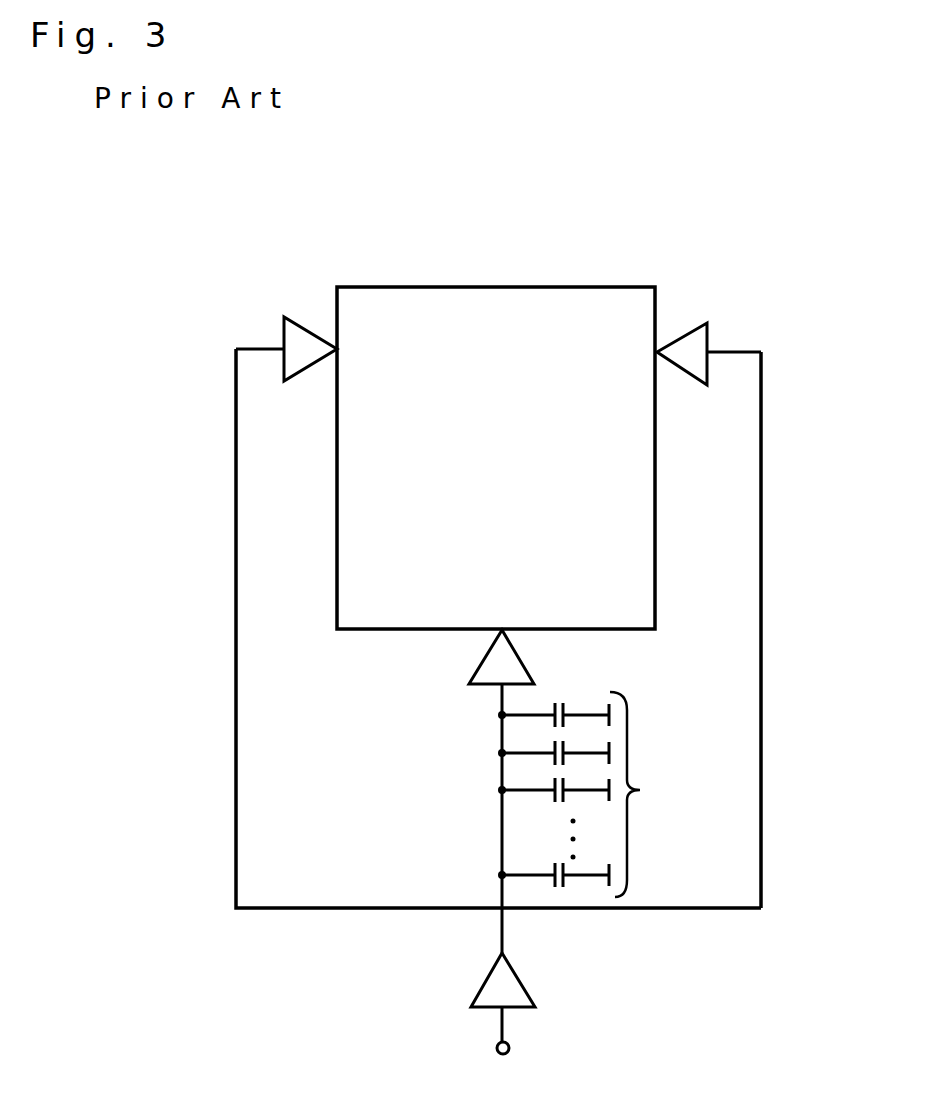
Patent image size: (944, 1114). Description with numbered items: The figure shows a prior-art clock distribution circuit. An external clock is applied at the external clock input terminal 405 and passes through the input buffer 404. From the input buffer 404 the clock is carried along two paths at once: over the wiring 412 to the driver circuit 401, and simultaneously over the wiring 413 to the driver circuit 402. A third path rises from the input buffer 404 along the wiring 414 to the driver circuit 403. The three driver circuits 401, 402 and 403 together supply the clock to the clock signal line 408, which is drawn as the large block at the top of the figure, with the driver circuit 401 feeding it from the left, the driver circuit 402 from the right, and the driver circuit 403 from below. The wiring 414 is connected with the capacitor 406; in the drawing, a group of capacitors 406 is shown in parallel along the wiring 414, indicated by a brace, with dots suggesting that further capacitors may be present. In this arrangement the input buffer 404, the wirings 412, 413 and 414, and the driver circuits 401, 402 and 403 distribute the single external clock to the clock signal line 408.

The driver circuit 401 is at (283, 327).
The driver circuit 402 is at (707, 332).
The driver circuit 403 is at (480, 665).
The input buffer 404 is at (480, 985).
The external clock input terminal 405 is at (497, 1048).
The capacitor 406 is at (630, 780).
The clock signal line 408 is at (510, 287).
The wiring 412 is at (236, 810).
The wiring 413 is at (761, 798).
The wiring 414 is at (502, 770).